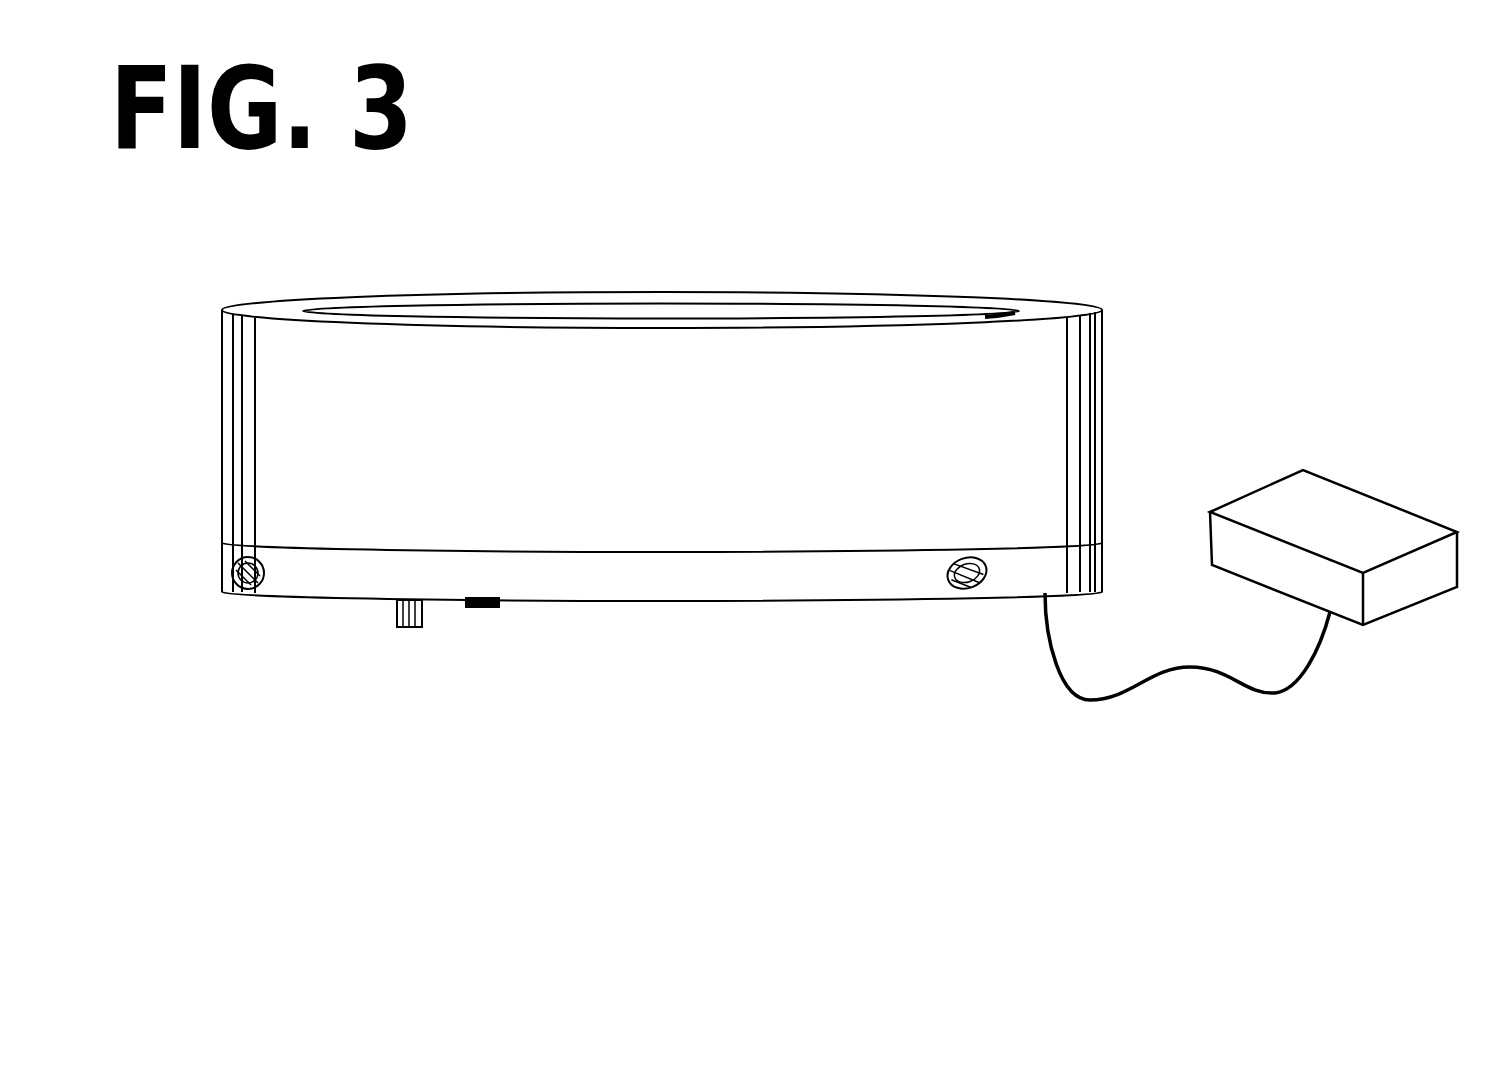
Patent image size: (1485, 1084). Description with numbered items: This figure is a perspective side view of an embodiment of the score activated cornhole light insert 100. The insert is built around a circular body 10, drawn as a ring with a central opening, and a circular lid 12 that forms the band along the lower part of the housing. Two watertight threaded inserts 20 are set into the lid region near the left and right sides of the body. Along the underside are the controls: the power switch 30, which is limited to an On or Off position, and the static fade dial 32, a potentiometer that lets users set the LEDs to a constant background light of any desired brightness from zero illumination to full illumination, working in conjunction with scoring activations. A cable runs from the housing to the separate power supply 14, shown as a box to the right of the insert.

The score activated cornhole light insert 100 is at (804, 524).
The circular body 10 is at (910, 385).
The circular lid 12 is at (830, 572).
The power supply 14 is at (1380, 520).
The watertight threaded inserts 20 is at (237, 597).
The power switch 30 is at (490, 610).
The static fade dial 32 is at (410, 632).